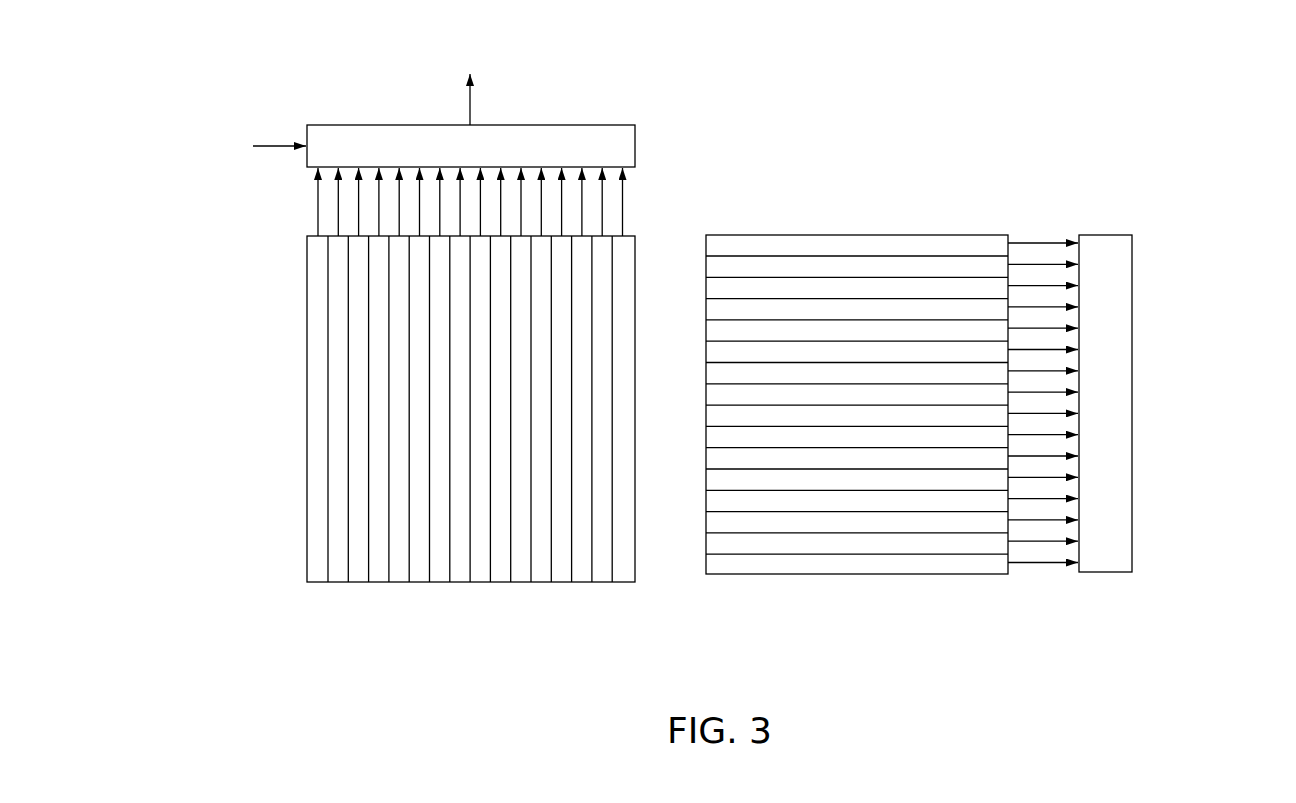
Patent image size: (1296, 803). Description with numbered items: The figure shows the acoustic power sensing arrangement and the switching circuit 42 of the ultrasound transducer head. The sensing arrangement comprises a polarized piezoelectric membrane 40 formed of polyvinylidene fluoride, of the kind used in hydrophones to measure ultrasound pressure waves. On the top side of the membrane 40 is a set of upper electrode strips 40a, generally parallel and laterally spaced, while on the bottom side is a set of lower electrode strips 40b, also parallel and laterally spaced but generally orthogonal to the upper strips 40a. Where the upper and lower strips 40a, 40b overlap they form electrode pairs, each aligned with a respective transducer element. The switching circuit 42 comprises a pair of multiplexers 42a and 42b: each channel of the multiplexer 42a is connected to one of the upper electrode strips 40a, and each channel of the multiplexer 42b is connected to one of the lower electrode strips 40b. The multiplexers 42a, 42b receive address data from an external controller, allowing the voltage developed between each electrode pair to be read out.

The polarized piezoelectric membrane 40 is at (595, 408).
The upper electrode strips 40a is at (338, 563).
The lower electrode strips 40b is at (810, 247).
The switching circuit 42 is at (697, 361).
The multiplexer 42a is at (533, 140).
The multiplexer 42b is at (1111, 232).